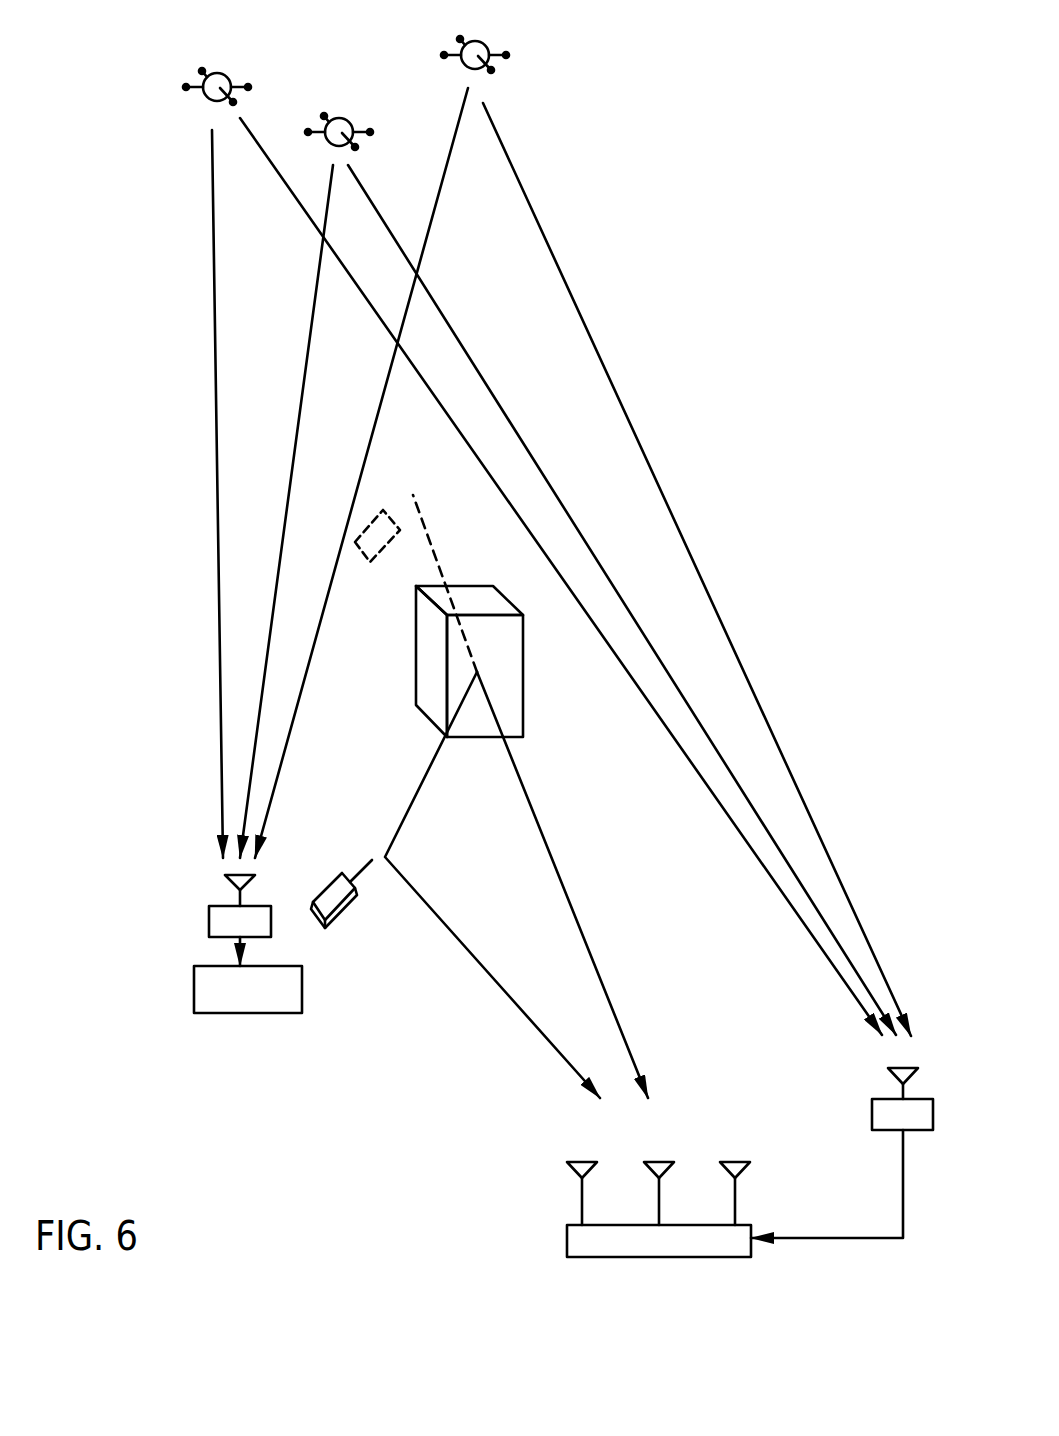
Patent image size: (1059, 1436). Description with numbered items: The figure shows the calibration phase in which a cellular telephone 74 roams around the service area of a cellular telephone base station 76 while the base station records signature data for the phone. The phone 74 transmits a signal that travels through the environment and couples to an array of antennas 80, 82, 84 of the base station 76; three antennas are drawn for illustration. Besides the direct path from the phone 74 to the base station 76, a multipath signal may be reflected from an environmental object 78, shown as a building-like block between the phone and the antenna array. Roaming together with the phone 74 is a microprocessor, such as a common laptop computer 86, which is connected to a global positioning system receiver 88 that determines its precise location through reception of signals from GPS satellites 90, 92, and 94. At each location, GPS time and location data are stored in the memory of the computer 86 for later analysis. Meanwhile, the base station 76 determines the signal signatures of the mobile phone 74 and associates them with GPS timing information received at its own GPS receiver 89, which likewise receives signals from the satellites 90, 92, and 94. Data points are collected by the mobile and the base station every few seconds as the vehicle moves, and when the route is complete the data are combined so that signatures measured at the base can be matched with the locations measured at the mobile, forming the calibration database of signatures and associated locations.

The cellular telephone 74 is at (355, 893).
The cellular telephone base station 76 is at (657, 1257).
The object 78 is at (525, 658).
The antenna 80 is at (576, 1165).
The antenna 82 is at (665, 1168).
The antenna 84 is at (742, 1168).
The microprocessor 86 is at (256, 1013).
The global positioning system receiver 88 is at (209, 920).
The GPS receiver 89 is at (872, 1117).
The GPS satellite 90 is at (218, 71).
The GPS satellite 92 is at (340, 116).
The GPS satellite 94 is at (474, 39).